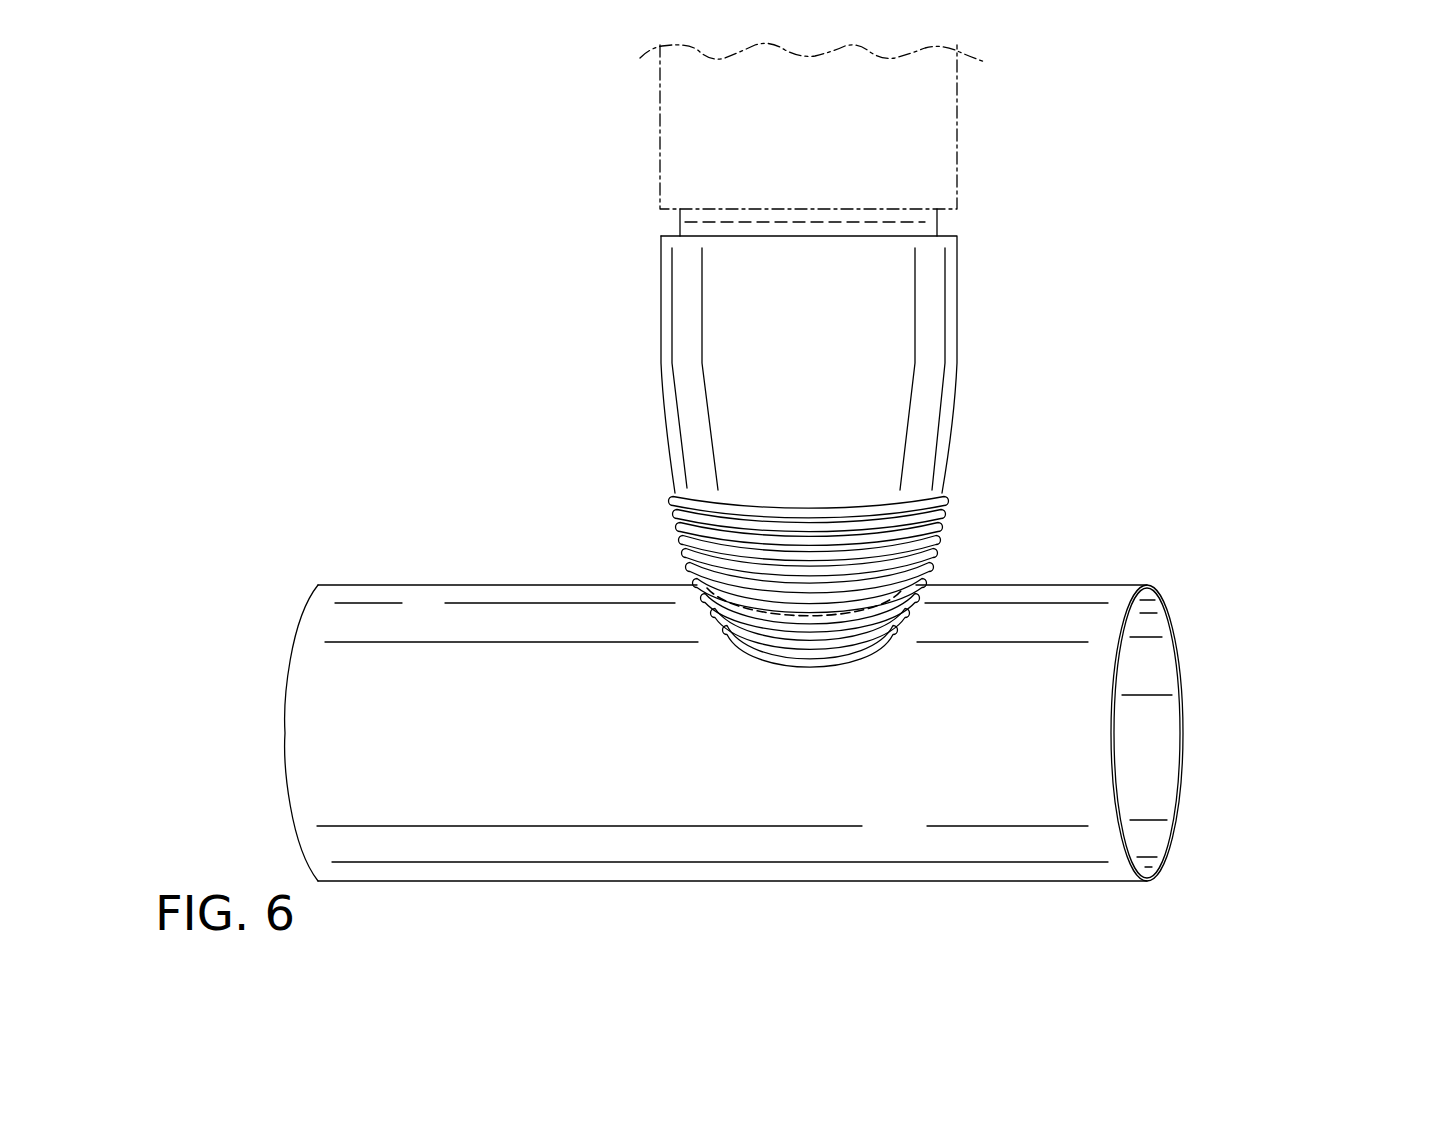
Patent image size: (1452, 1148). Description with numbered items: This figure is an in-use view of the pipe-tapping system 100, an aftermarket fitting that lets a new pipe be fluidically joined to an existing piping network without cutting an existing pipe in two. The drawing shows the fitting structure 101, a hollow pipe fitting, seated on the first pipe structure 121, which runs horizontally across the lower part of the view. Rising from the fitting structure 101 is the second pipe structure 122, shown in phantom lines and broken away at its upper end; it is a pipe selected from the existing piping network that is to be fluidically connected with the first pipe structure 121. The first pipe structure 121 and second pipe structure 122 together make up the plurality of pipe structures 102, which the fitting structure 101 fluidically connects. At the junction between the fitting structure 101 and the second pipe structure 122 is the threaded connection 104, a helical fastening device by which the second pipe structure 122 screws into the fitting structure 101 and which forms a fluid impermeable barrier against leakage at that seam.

The pipe-tapping system 100 is at (388, 230).
The fitting structure 101 is at (962, 400).
The threaded connection 104 is at (922, 223).
The plurality of pipe structures 102 is at (1380, 845).
The first pipe structure 121 is at (1155, 657).
The second pipe structure 122 is at (915, 140).